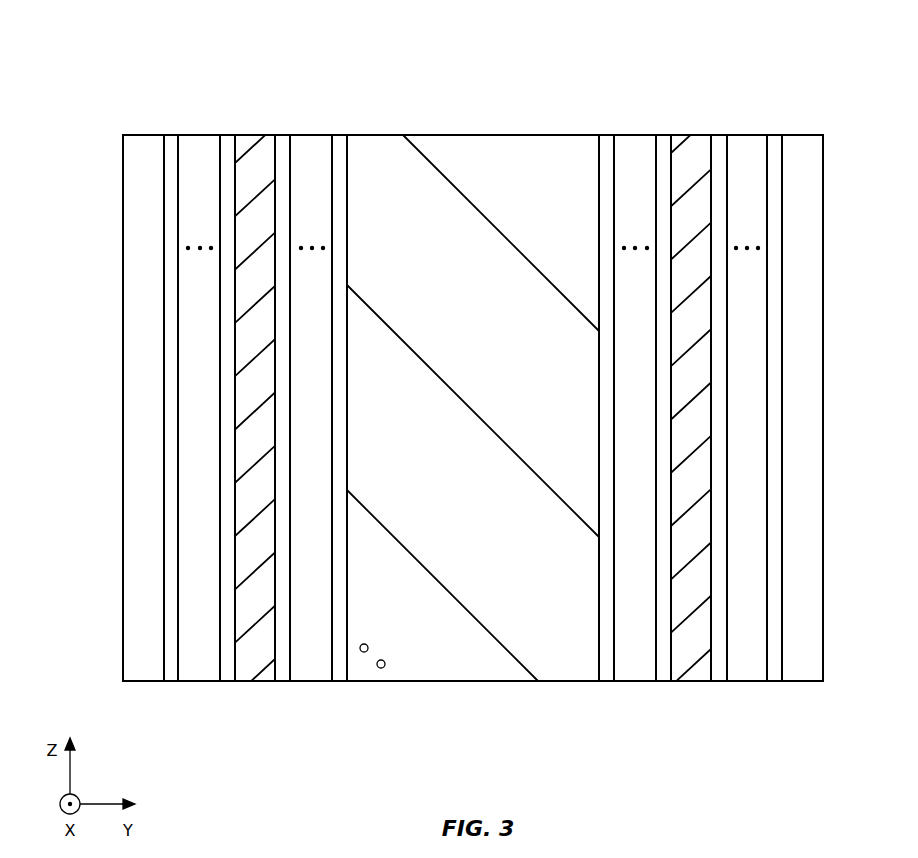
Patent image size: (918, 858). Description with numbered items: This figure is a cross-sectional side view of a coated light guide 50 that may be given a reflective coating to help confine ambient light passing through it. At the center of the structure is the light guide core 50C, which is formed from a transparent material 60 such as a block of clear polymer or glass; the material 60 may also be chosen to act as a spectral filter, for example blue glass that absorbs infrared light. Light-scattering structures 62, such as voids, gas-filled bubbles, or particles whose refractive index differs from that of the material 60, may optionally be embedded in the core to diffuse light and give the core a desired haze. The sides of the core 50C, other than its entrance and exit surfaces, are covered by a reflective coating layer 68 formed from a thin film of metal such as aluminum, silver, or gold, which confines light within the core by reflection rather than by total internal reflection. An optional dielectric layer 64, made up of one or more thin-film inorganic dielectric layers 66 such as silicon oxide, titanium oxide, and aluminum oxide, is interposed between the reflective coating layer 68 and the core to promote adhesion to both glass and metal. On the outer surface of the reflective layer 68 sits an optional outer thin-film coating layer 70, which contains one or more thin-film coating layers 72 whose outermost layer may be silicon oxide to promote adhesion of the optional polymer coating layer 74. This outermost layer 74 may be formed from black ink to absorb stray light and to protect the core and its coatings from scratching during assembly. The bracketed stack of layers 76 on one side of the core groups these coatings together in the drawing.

The light guide 50 is at (124, 50).
The light guide core 50C is at (598, 125).
The transparent material 60 is at (478, 668).
The light-scattering structures 62 is at (364, 652).
The dielectric layer 64 is at (348, 125).
The dielectric layers 66 is at (285, 195).
The reflective coating layer 68 is at (236, 125).
The outer thin-film coating layer 70 is at (165, 125).
The thin-film coating layers 72 is at (225, 230).
The polymer coating layer 74 is at (164, 125).
The peripheral inactive region 76 is at (347, 692).